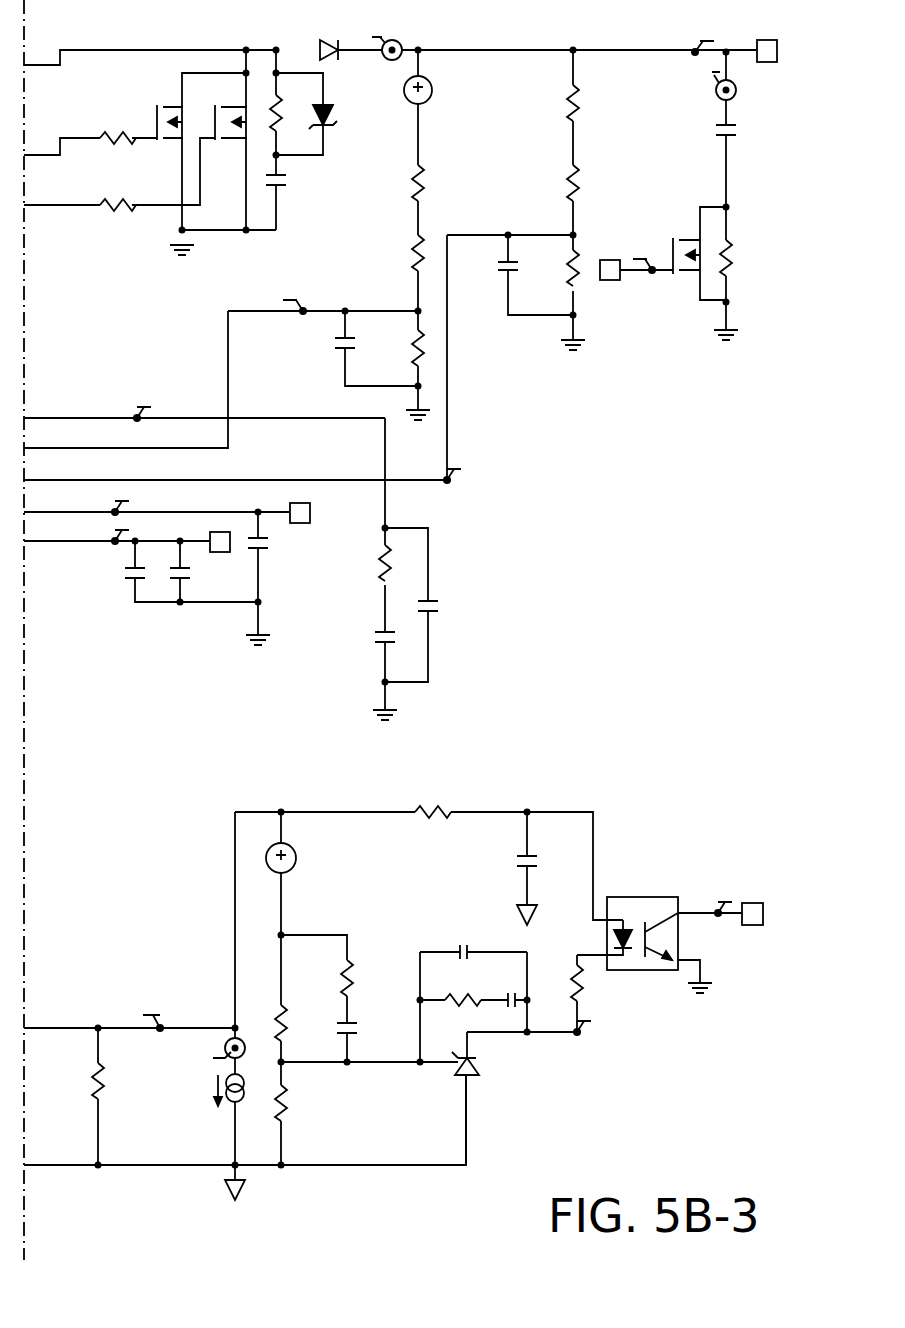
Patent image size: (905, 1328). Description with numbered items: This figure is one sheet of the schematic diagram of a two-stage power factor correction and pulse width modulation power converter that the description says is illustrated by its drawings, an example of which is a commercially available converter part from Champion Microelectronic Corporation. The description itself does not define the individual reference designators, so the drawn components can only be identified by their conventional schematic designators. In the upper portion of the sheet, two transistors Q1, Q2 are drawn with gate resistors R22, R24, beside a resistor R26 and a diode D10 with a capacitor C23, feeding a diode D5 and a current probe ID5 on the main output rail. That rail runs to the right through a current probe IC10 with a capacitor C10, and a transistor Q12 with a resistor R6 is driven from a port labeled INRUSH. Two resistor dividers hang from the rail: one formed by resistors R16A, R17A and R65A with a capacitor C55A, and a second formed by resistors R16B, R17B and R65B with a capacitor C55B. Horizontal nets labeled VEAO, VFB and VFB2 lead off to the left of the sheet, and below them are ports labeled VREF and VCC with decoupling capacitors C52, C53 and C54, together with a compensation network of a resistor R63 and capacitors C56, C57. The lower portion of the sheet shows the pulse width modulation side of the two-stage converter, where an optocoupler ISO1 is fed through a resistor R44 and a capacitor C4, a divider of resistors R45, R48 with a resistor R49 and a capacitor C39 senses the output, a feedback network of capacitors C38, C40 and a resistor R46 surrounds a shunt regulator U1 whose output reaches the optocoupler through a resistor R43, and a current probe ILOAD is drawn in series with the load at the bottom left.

The gate resistor 22 ohm R22 is at (117, 136).
The gate resistor 22 ohm R24 is at (117, 204).
The MOSFET switch Q1 is at (167, 135).
The MOSFET switch Q2 is at (230, 135).
The resistor 18k R26 is at (291, 110).
The diode MUR1100 D10 is at (360, 127).
The capacitor 470p C23 is at (298, 186).
The boost diode D5 is at (325, 37).
The current probe ID5 is at (390, 37).
The divider resistor R16A is at (391, 183).
The divider resistor R17A is at (391, 253).
The capacitor C55A is at (351, 348).
The divider resistor R65A is at (394, 348).
The divider resistor R16B is at (548, 103).
The divider resistor R17B is at (548, 183).
The capacitor C55B is at (485, 266).
The divider resistor R65B is at (552, 269).
The current probe IC10 is at (704, 88).
The capacitor C10 is at (744, 164).
The inrush MOSFET Q12 is at (693, 255).
The resistor R6 is at (738, 258).
The inrush control port INRUSH is at (629, 268).
The voltage error amplifier output net VEAO is at (204, 404).
The voltage feedback net VFB is at (323, 299).
The voltage feedback net 2 VFB2 is at (261, 468).
The reference voltage port VREF is at (189, 505).
The supply voltage port VCC is at (128, 532).
The capacitor 1u C52 is at (116, 580).
The capacitor 100n C53 is at (200, 580).
The capacitor 1u C54 is at (276, 550).
The compensation resistor R63 is at (365, 563).
The compensation capacitor C56 is at (365, 638).
The compensation capacitor C57 is at (445, 606).
The resistor R44 is at (431, 824).
The capacitor C4 is at (512, 868).
The optocoupler ISO1 is at (644, 933).
The resistor R49 is at (332, 979).
The divider resistor R45 is at (298, 1023).
The capacitor C39 is at (363, 1041).
The divider resistor R48 is at (298, 1103).
The compensation capacitor C38 is at (473, 941).
The compensation resistor R46 is at (464, 1012).
The compensation capacitor C40 is at (506, 989).
The resistor R43 is at (559, 993).
The shunt regulator CM-431 U1 is at (495, 1108).
The load current probe ILOAD is at (201, 1051).